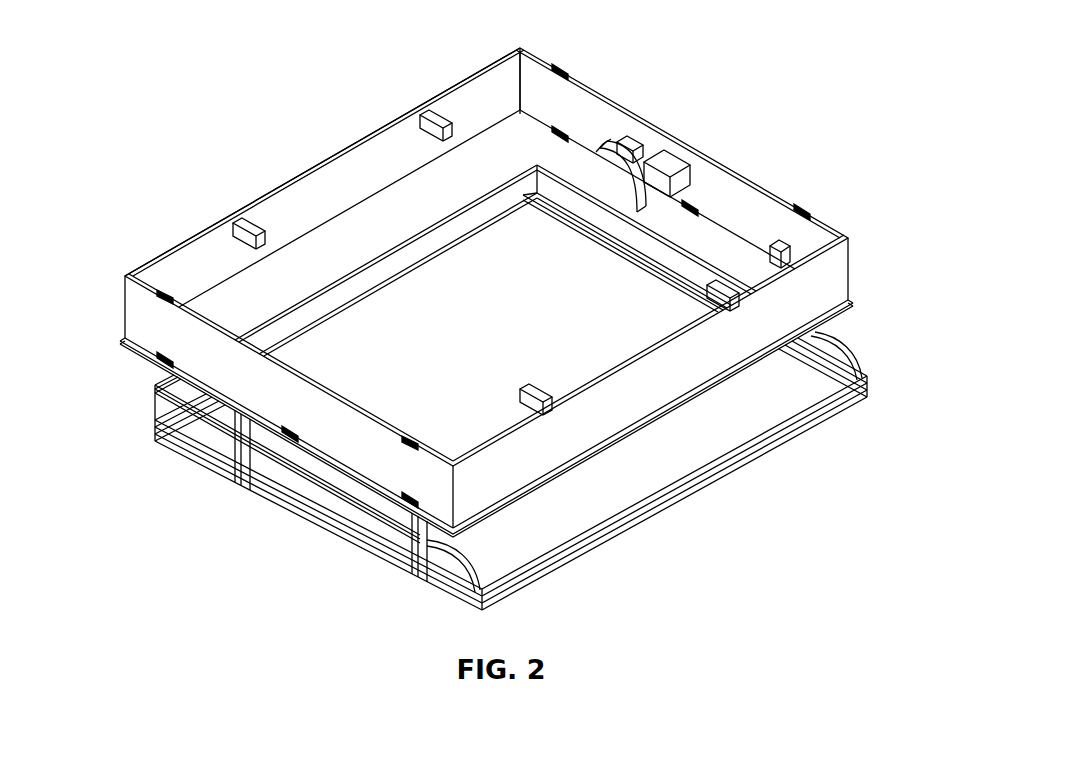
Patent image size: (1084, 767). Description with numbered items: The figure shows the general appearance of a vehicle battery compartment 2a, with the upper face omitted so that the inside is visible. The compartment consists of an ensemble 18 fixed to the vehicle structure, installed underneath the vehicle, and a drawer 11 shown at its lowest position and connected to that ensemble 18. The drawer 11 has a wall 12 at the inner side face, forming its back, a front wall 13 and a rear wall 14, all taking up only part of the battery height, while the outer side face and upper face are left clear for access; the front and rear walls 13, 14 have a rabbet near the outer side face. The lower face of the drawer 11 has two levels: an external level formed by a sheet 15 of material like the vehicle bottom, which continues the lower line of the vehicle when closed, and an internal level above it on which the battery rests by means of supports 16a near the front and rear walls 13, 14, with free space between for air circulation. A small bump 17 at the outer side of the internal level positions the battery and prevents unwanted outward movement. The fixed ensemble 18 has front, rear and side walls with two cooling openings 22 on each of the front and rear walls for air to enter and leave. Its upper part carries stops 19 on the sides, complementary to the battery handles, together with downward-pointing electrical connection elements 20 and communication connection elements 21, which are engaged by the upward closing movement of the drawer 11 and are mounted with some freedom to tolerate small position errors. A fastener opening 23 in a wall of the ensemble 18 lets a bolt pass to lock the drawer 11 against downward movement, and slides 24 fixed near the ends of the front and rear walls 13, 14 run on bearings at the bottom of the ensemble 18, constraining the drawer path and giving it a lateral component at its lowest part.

The upper frame body 2a is at (248, 155).
The drawer 11 is at (727, 488).
The wall of the inner side face 12 is at (448, 235).
The front wall 13 is at (680, 258).
The rear wall 14 is at (320, 492).
The sheet 15 is at (578, 518).
The corner gusset 16a is at (500, 585).
The bump 17 is at (560, 568).
The ensemble fixed to the vehicle structure 18 is at (180, 262).
The stops 19 is at (432, 118).
The electrical connection elements 20 is at (690, 180).
The communication connection elements 21 is at (660, 160).
The cooling openings 22 is at (565, 76).
The fastener opening 23 is at (692, 205).
The slides 24 is at (632, 152).